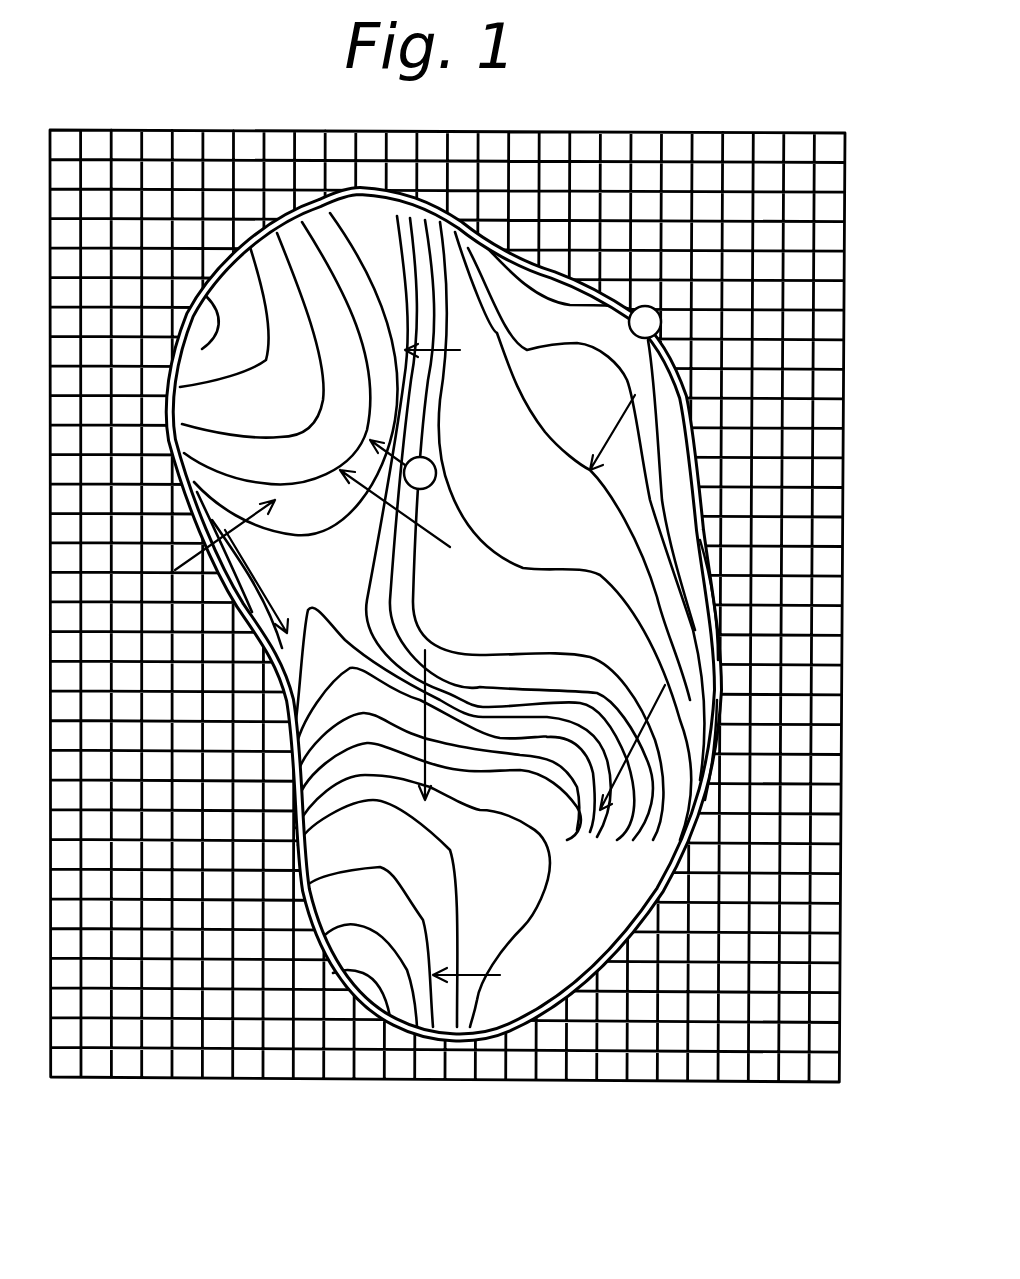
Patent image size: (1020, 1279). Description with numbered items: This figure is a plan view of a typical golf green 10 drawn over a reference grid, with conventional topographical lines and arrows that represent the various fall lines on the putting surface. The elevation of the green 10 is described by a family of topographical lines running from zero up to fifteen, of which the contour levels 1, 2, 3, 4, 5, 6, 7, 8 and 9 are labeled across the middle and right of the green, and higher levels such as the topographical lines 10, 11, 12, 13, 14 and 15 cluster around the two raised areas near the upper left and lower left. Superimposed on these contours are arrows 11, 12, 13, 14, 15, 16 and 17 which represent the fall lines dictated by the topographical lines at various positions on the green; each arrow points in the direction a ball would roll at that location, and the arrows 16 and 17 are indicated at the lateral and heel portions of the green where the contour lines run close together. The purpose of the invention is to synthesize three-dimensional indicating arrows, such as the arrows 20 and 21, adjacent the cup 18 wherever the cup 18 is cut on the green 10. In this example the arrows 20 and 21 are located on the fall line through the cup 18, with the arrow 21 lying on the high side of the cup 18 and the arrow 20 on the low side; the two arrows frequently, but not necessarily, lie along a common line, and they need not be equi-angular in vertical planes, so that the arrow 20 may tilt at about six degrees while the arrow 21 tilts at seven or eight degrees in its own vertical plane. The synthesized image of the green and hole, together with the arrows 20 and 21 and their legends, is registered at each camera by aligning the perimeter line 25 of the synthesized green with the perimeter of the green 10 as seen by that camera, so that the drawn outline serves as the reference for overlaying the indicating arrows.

The topographical line 1 is at (584, 431).
The topographical line 2 is at (572, 466).
The topographical line 3 is at (565, 531).
The topographical line 4 is at (538, 530).
The topographical line 5 is at (425, 529).
The topographical line 6 is at (423, 528).
The topographical line 7 is at (453, 722).
The topographical line 8 is at (394, 522).
The topographical line 9 is at (381, 526).
The golf green 10 is at (880, 401).
The arrow 11 is at (617, 420).
The arrow 12 is at (403, 163).
The arrow 13 is at (377, 500).
The arrow 14 is at (245, 615).
The arrow 15 is at (205, 793).
The arrow 16 is at (714, 765).
The arrow 17 is at (470, 978).
The cup 18 is at (440, 468).
The arrow 20 is at (390, 430).
The arrow 21 is at (457, 494).
The perimeter line 25 is at (718, 610).